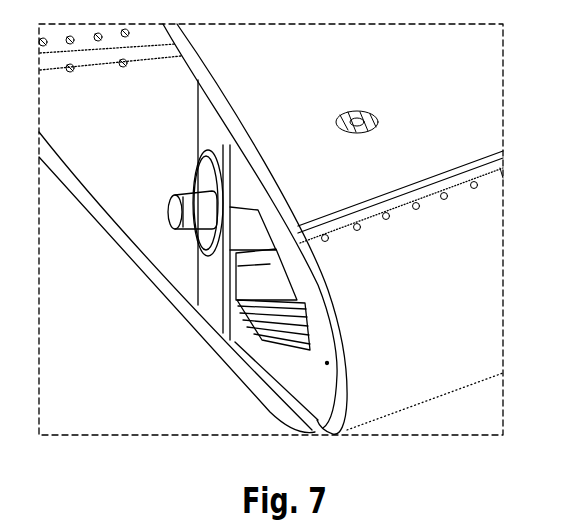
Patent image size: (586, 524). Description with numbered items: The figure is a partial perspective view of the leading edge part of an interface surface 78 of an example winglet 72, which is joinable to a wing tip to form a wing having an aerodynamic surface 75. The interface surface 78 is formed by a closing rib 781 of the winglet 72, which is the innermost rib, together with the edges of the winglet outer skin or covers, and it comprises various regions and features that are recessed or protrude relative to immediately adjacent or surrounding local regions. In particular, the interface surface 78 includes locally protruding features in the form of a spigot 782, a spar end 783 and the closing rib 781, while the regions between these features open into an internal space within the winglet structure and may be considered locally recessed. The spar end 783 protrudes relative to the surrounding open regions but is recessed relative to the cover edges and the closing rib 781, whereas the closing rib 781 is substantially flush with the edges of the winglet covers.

The winglet 72 is at (498, 83).
The aerodynamic surface 75 is at (334, 80).
The interface surface 78 is at (140, 222).
The closing rib 781 is at (265, 359).
The spigot 782 is at (196, 212).
The spar end 783 is at (212, 130).